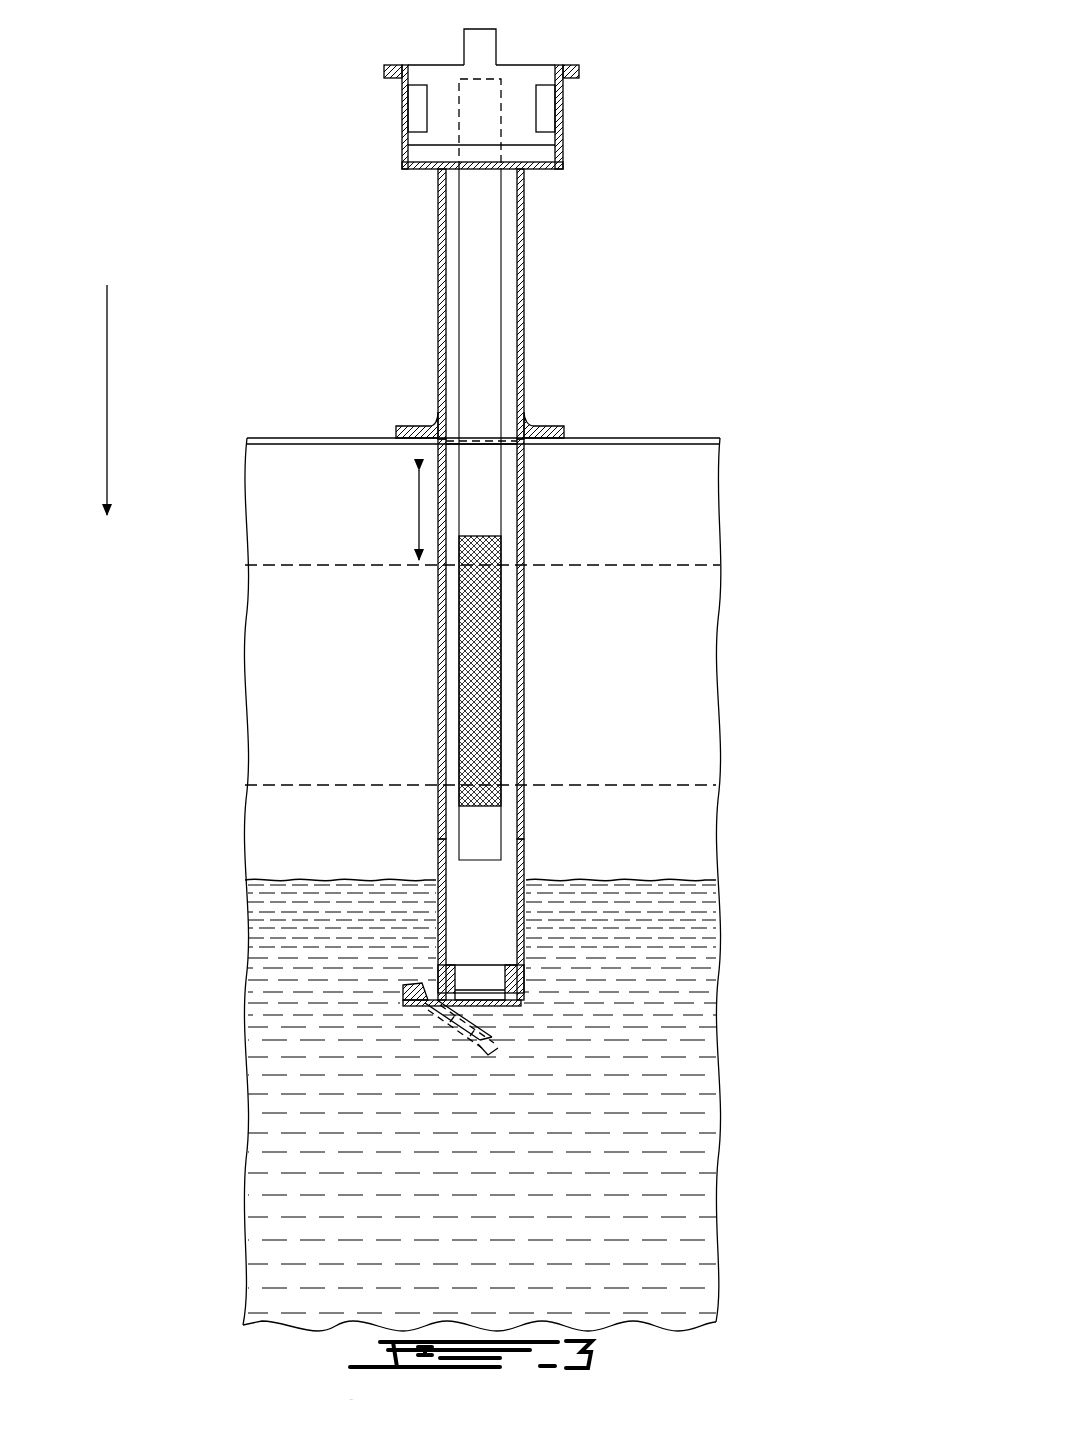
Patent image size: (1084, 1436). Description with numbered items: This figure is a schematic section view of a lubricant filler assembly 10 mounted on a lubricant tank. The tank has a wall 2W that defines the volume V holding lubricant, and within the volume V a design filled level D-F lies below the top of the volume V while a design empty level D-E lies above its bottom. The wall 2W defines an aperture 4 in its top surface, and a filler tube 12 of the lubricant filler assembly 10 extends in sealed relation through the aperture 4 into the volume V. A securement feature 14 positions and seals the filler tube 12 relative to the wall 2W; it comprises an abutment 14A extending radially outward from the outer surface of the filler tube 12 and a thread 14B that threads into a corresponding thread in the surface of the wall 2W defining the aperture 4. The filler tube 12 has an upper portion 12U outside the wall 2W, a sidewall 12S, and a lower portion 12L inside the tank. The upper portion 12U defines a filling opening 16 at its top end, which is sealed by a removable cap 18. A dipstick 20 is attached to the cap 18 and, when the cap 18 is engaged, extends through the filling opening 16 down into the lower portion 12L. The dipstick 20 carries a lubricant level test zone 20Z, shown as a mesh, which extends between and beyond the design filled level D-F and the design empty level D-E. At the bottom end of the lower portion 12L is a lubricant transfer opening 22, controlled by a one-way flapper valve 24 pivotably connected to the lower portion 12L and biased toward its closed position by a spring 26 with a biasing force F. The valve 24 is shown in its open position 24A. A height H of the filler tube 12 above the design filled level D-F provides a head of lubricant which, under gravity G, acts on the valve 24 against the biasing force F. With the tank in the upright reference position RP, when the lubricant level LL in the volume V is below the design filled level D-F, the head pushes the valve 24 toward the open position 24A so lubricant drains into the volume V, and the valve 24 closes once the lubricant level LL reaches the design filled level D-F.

The lubricant filler assembly 10 is at (682, 80).
The upright reference position RP is at (770, 132).
The cap 18 is at (522, 73).
The filling opening 16 is at (522, 84).
The dipstick 20 is at (632, 514).
The lubricant level test zone 20Z is at (487, 684).
The filler tube 12 is at (484, 584).
The upper portion 12U is at (436, 225).
The sidewall 12S is at (528, 617).
The lower portion 12L is at (436, 846).
The securement feature 14 is at (445, 374).
The abutment 14A is at (417, 425).
The thread 14B is at (512, 432).
The aperture 4 is at (533, 436).
The wall 2W is at (680, 438).
The gravity G is at (107, 383).
The volume V is at (281, 487).
The height H is at (419, 517).
The design filled level D-F is at (232, 565).
The design empty level D-E is at (232, 785).
The lubricant level LL is at (676, 880).
The lubricant transfer opening 22 is at (508, 992).
The spring 26 is at (410, 988).
The valve 24 is at (415, 1022).
The open position 24A is at (470, 1052).
The biasing force F is at (530, 1018).